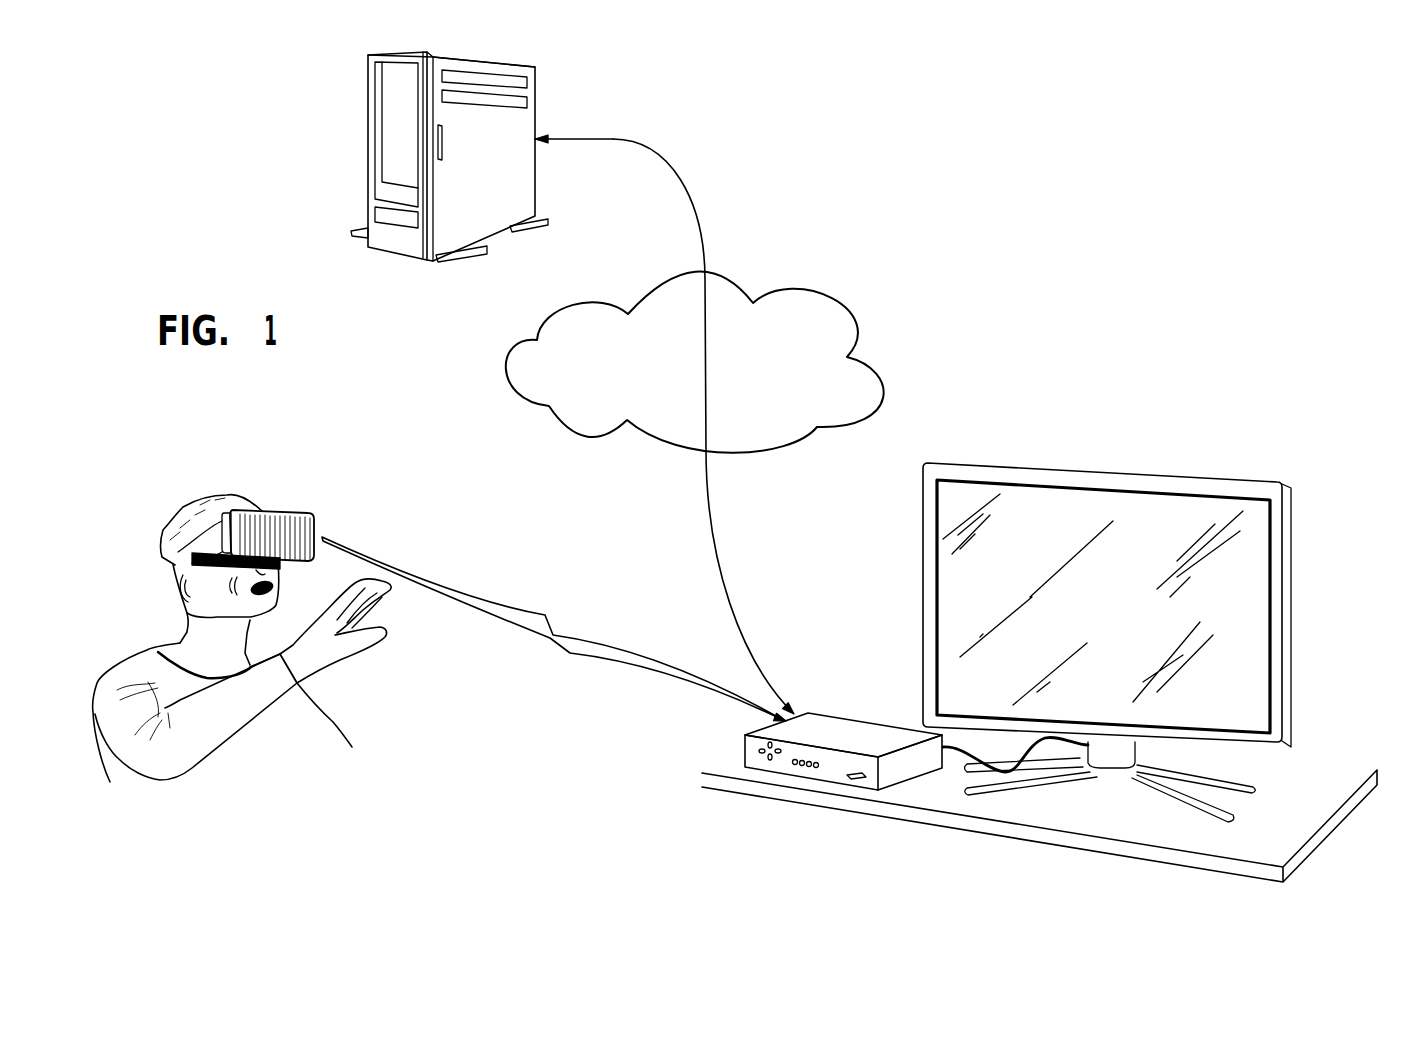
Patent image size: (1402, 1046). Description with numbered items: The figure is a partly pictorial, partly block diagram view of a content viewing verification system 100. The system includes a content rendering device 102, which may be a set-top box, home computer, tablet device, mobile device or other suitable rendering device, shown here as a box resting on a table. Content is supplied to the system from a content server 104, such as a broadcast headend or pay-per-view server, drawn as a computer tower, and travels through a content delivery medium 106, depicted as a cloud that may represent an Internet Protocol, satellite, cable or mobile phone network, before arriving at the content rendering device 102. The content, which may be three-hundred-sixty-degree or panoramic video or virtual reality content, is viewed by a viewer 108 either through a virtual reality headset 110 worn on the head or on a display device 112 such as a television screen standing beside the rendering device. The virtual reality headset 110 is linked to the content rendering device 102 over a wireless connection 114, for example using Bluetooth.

The content viewing verification system 100 is at (1050, 317).
The content rendering device 102 is at (860, 722).
The content server 104 is at (367, 145).
The content delivery medium 106 is at (792, 302).
The viewer 108 is at (137, 667).
The virtual reality headset 110 is at (288, 518).
The display device 112 is at (1148, 467).
The wireless connection 114 is at (460, 592).